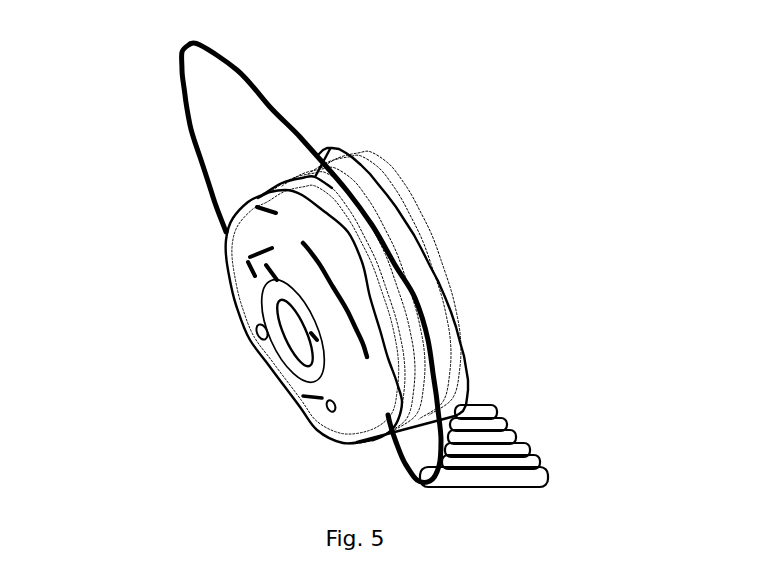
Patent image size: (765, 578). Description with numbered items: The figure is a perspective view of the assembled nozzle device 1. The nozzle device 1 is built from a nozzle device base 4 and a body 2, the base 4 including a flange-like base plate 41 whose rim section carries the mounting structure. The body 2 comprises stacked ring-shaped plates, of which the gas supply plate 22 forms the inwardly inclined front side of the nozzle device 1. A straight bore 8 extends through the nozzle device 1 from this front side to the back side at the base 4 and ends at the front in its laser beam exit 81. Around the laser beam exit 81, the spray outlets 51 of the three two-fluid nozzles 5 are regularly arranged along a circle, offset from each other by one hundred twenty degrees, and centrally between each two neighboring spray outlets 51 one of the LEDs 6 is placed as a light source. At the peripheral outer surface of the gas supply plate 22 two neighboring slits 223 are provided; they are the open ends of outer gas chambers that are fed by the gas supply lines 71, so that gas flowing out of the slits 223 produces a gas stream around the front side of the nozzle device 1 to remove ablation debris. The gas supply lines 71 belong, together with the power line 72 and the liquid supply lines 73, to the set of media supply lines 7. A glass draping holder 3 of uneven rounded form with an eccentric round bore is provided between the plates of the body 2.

The nozzle device 1 is at (145, 149).
The body 2 is at (203, 235).
The gas supply plate 22 is at (320, 198).
The slits 223 is at (366, 358).
The draping holder 3 is at (232, 95).
The nozzle device base 4 is at (431, 194).
The base plate 41 is at (432, 290).
The two-fluid nozzles 5 is at (305, 420).
The spray outlets 51 is at (301, 391).
The LEDs 6 is at (257, 332).
The media supply lines 7 is at (545, 427).
The gas supply lines 71 is at (530, 480).
The power line 72 is at (513, 447).
The liquid supply lines 73 is at (490, 424).
The bore 8 is at (276, 318).
The laser beam exit 81 is at (305, 350).